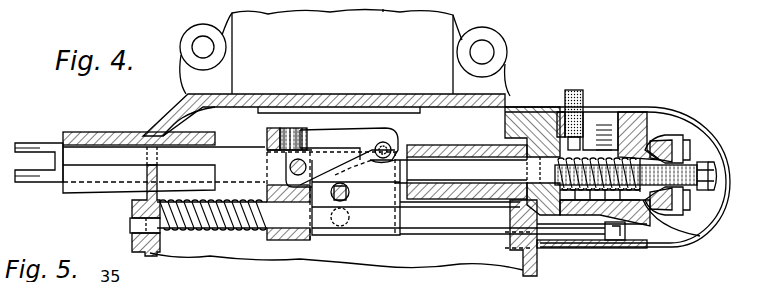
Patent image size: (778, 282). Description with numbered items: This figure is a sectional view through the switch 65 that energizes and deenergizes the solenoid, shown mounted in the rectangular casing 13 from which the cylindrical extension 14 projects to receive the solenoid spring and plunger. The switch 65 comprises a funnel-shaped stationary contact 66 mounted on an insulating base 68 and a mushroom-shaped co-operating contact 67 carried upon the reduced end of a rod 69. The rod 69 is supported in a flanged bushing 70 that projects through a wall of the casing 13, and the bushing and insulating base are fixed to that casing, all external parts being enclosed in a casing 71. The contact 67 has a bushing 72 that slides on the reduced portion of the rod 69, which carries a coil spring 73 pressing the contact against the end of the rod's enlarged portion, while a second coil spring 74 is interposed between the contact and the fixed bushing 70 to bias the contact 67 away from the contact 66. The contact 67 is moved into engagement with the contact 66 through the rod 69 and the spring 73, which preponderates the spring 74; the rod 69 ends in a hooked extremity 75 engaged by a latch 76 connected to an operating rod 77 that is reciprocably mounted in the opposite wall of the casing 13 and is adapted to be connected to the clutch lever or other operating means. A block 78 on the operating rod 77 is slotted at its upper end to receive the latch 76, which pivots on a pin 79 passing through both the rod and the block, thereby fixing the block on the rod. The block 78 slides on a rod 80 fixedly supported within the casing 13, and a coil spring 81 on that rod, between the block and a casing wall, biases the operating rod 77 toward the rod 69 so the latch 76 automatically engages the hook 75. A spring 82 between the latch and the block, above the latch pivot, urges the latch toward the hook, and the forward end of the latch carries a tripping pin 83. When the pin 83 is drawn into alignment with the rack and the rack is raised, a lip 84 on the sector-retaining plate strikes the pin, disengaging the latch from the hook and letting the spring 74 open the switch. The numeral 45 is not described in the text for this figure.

The rectangular casing 13 is at (172, 116).
The cylindrical extension 14 is at (345, 53).
The frame 45 is at (382, 6).
The switch 65 is at (678, 250).
The funnel-shaped stationary contact 66 is at (645, 128).
The mushroom-shaped co-operating contact 67 is at (700, 236).
The insulating base 68 is at (580, 249).
The rod 69 is at (440, 168).
The flanged bushing 70 is at (487, 150).
The casing 71 is at (720, 142).
The bushing 72 is at (652, 143).
The coil spring 73 is at (718, 166).
The coil spring 74 is at (645, 240).
The hooked extremity 75 is at (378, 175).
The latch 76 is at (349, 156).
The operating rod 77 is at (237, 158).
The block 78 is at (288, 243).
The pin 79 is at (290, 167).
The rod 80 is at (490, 226).
The coil spring 81 is at (240, 228).
The spring 82 is at (293, 130).
The tripping pin 83 is at (388, 140).
The lip 84 is at (350, 196).